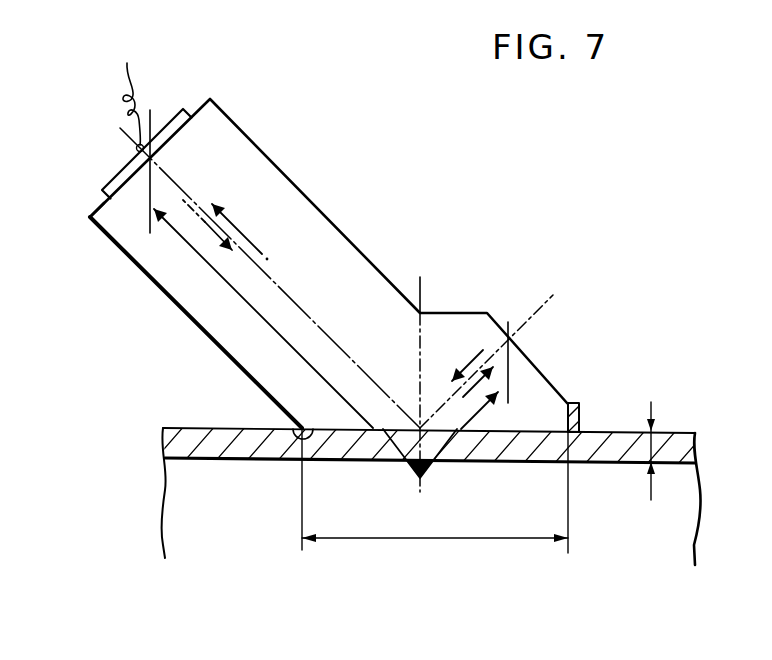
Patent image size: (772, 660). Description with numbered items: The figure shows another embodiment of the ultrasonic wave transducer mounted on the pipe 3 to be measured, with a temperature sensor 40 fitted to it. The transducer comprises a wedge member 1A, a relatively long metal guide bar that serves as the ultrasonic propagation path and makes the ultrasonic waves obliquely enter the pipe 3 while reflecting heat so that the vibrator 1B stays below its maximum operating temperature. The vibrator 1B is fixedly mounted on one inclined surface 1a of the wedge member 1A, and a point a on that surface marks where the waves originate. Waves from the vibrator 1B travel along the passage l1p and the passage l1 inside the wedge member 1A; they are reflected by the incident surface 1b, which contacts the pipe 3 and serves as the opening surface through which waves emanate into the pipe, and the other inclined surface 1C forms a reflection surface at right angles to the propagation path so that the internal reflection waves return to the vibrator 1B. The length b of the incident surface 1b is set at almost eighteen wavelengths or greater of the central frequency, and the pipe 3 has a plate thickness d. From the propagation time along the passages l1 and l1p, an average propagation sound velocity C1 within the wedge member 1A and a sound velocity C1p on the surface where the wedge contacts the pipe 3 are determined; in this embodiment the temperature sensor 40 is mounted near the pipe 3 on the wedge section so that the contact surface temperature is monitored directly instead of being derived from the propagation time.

The wedge member 1A is at (341, 255).
The vibrator 1B is at (133, 159).
The inclined surface 1C is at (497, 323).
The inclined surface 1a is at (97, 210).
The incident surface 1b is at (274, 427).
The pipe 3 is at (182, 428).
The temperature sensor 40 is at (580, 416).
The light source point a is at (131, 104).
The length of the incident surface b is at (440, 538).
The plate thickness of the pipe d is at (655, 448).
The average propagation sound velocity within the wedge C1 is at (238, 232).
The sound velocity on the wedge contact surface C1p is at (402, 430).
The passage l1 is at (445, 428).
The passage l1p is at (257, 320).